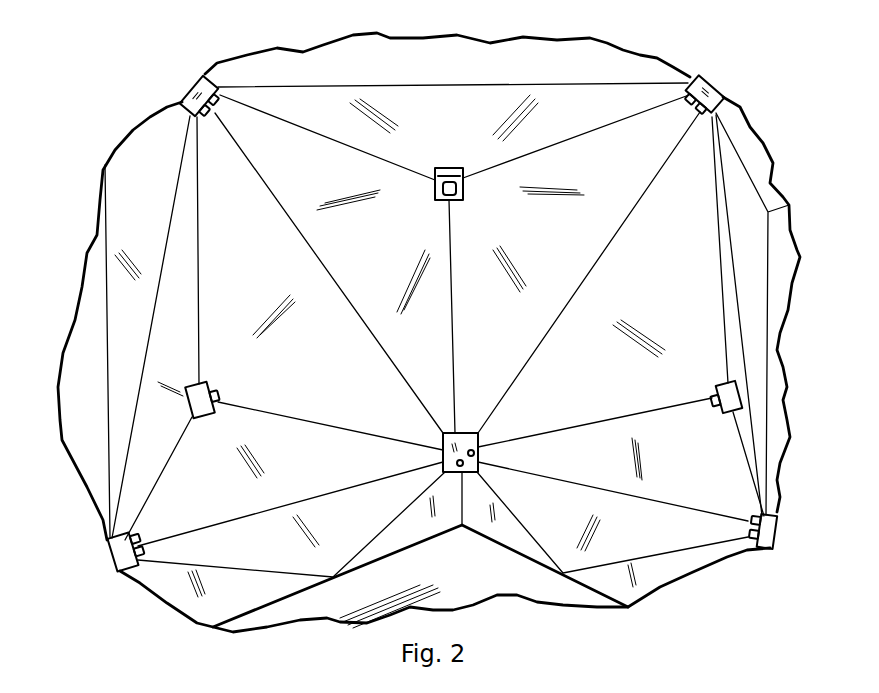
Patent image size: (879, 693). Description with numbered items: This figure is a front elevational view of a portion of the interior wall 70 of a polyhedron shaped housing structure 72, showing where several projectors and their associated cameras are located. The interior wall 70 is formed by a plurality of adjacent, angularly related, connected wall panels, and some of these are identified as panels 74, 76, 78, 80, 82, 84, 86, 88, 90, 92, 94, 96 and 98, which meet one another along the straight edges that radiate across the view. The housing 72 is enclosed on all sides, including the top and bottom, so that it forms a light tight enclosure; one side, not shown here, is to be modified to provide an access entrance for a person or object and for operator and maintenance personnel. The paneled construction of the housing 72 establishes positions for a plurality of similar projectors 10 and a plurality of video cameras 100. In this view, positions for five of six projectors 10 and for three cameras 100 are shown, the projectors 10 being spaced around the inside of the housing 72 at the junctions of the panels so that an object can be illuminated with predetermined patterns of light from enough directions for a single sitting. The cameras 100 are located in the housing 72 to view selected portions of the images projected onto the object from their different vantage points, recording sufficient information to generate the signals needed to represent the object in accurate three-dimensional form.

The projector 10 is at (221, 98).
The interior wall 70 is at (614, 70).
The polyhedron shaped housing structure 72 is at (784, 148).
The wall panel 74 is at (115, 285).
The wall panel 76 is at (145, 434).
The wall panel 78 is at (234, 272).
The wall panel 80 is at (426, 137).
The wall panel 82 is at (365, 257).
The wall panel 84 is at (584, 176).
The wall panel 86 is at (588, 377).
The wall panel 88 is at (757, 332).
The wall panel 90 is at (766, 425).
The wall panel 92 is at (671, 487).
The wall panel 94 is at (613, 544).
The wall panel 96 is at (337, 541).
The wall panel 98 is at (281, 481).
The video camera 100 is at (450, 168).